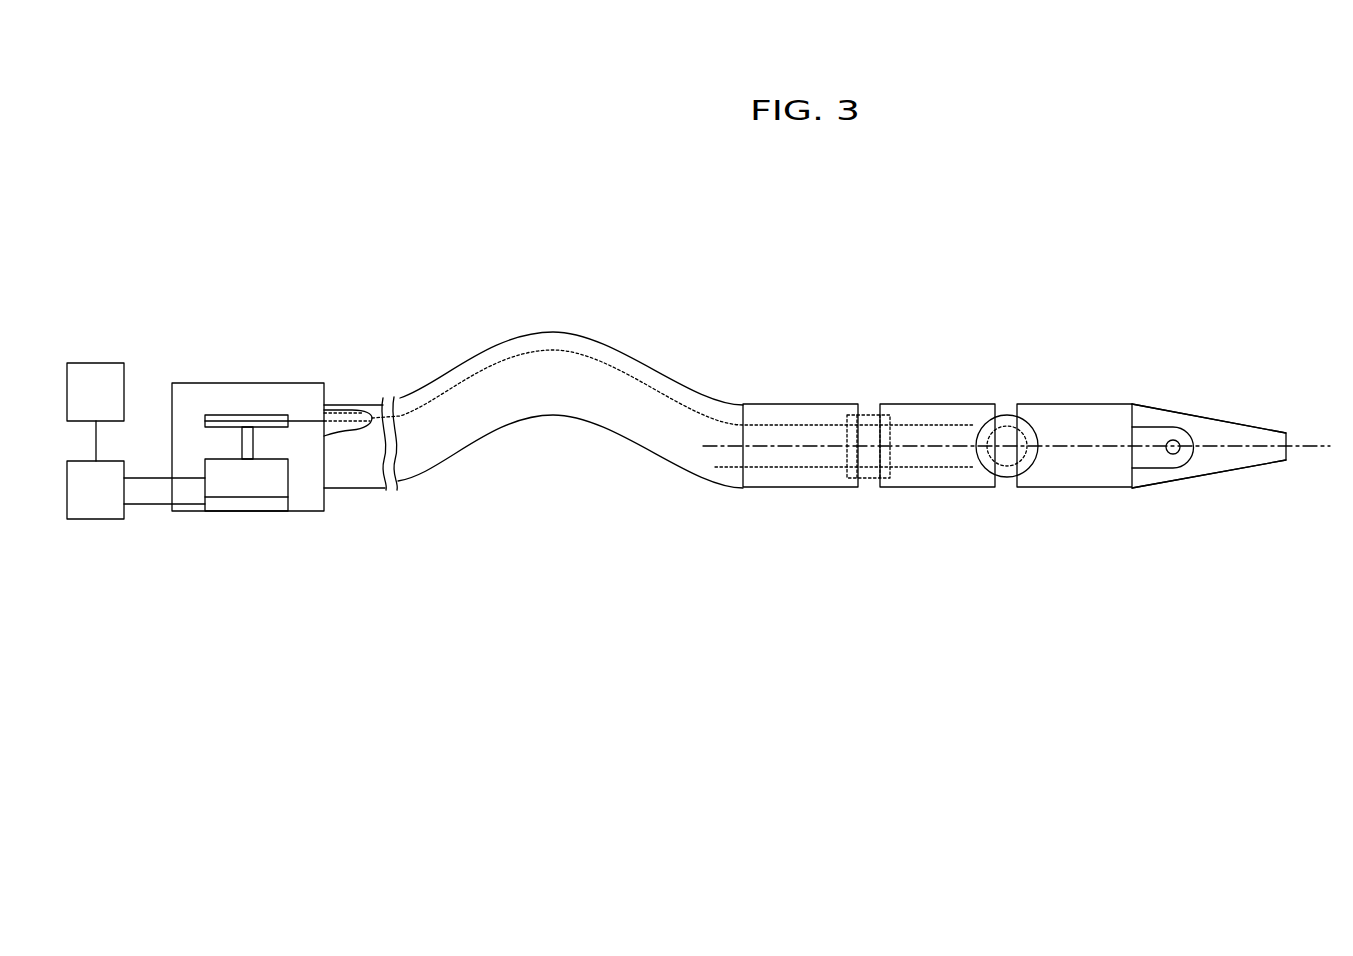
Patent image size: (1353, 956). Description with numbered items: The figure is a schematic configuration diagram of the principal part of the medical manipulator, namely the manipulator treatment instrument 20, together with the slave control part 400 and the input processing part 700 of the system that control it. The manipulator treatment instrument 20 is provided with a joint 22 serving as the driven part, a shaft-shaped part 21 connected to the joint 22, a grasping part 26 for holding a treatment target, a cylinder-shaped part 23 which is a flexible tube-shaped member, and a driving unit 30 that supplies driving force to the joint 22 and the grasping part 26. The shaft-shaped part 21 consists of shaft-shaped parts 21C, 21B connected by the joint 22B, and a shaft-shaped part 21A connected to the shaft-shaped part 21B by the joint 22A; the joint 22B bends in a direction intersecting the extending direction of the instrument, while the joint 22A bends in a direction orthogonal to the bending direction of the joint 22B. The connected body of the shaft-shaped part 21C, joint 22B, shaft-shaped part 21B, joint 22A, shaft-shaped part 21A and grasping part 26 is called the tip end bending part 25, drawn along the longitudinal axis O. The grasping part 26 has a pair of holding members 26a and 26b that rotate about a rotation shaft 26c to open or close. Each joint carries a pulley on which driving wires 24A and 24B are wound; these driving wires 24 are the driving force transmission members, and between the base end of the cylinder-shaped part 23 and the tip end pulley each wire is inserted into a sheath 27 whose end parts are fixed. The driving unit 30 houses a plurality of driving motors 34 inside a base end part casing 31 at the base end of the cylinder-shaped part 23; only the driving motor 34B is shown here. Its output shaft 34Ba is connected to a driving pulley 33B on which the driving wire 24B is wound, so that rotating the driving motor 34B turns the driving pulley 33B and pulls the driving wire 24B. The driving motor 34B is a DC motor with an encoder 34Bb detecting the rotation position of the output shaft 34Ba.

The input processing part 700 is at (91, 363).
The slave control part 400 is at (91, 520).
The driving unit 30 is at (273, 355).
The base end part casing 31 is at (172, 383).
The driving pulley 33B is at (230, 415).
The driving motor 34 is at (290, 514).
The driving motor 34B is at (290, 514).
The output shaft 34Ba is at (240, 440).
The encoder 34Bb is at (262, 506).
The driving wire 24 is at (606, 420).
The driving wire 24B is at (304, 421).
The driving wire 24A is at (937, 468).
The sheath 27 is at (344, 412).
The cylinder-shaped part 23 is at (627, 353).
The manipulator treatment instrument 20 is at (1009, 372).
The shaft-shaped part 21 is at (942, 403).
The shaft-shaped part 21A is at (1082, 404).
The shaft-shaped part 21B is at (933, 404).
The shaft-shaped part 21C is at (803, 404).
The joint 22 is at (960, 507).
The joint 22A is at (1013, 500).
The joint 22B is at (868, 498).
The tip end bending part 25 is at (1133, 551).
The grasping part 26 is at (1222, 444).
The holding member 26a is at (1215, 427).
The holding member 26b is at (1243, 460).
The rotation shaft 26c is at (1194, 514).
The longitudinal axis O is at (1318, 448).